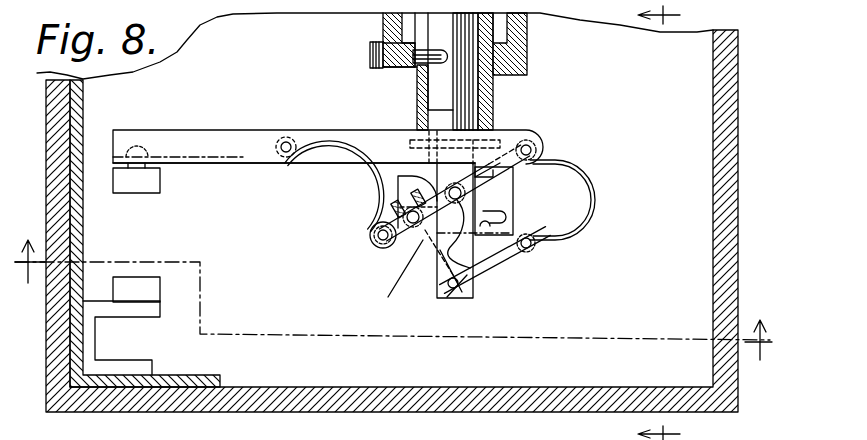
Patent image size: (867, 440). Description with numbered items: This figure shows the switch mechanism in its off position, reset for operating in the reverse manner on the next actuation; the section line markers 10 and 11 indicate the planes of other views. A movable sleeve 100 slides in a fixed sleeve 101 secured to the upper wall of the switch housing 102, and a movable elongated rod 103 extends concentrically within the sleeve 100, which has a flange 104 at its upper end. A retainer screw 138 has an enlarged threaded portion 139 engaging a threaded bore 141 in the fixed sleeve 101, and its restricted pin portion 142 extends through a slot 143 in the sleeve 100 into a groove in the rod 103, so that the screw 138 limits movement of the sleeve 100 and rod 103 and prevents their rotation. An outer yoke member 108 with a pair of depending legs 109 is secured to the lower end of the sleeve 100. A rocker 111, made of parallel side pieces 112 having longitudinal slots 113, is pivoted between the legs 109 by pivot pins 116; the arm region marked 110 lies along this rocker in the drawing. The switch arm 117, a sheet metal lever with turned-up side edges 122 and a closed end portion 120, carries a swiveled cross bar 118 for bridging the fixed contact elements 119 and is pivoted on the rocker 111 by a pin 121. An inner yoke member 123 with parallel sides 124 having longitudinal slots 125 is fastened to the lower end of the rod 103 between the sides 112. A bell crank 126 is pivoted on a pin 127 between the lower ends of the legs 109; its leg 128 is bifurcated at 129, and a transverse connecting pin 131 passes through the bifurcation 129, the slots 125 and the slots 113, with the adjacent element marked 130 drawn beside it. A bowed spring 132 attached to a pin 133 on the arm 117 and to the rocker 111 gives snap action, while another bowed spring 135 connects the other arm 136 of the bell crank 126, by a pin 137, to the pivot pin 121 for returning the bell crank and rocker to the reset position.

The section line 10 is at (674, 223).
The section line 11 is at (393, 313).
The movable sleeve 100 is at (465, 86).
The fixed sleeve 101 is at (524, 53).
The switch housing 102 is at (732, 253).
The movable elongated rod 103 is at (493, 78).
The flange 104 is at (445, 100).
The outer yoke member 108 is at (437, 256).
The depending legs 109 is at (463, 298).
The arm 110 is at (454, 192).
The rocker 111 is at (388, 256).
The side pieces 112 is at (518, 177).
The longitudinal slots 113 is at (397, 179).
The pivot pins 116 is at (464, 234).
The switch arm 117 is at (237, 130).
The cross bar 118 is at (148, 180).
The fixed contact elements 119 is at (145, 295).
The closed end portion 120 is at (191, 154).
The pin 121 is at (540, 150).
The turned-up side edges 122 is at (323, 143).
The inner yoke member 123 is at (520, 203).
The parallel sides 124 is at (511, 221).
The longitudinal slots 125 is at (498, 262).
The bell crank 126 is at (493, 291).
The pin or shaft 127 is at (453, 289).
The bell crank leg 128 is at (387, 275).
The bifurcated portion 129 is at (398, 181).
The roller carrier 130 is at (398, 254).
The transverse connecting pin 131 is at (394, 209).
The bowed spring 132 is at (292, 236).
The pin 133 is at (286, 141).
The bowed spring 135 is at (596, 215).
The bell crank arm 136 is at (494, 281).
The pin 137 is at (533, 246).
The screw 138 is at (368, 75).
The enlarged threaded portion 139 is at (383, 32).
The threaded bore 141 is at (401, 70).
The pin portion 142 is at (444, 57).
The slot 143 is at (421, 95).